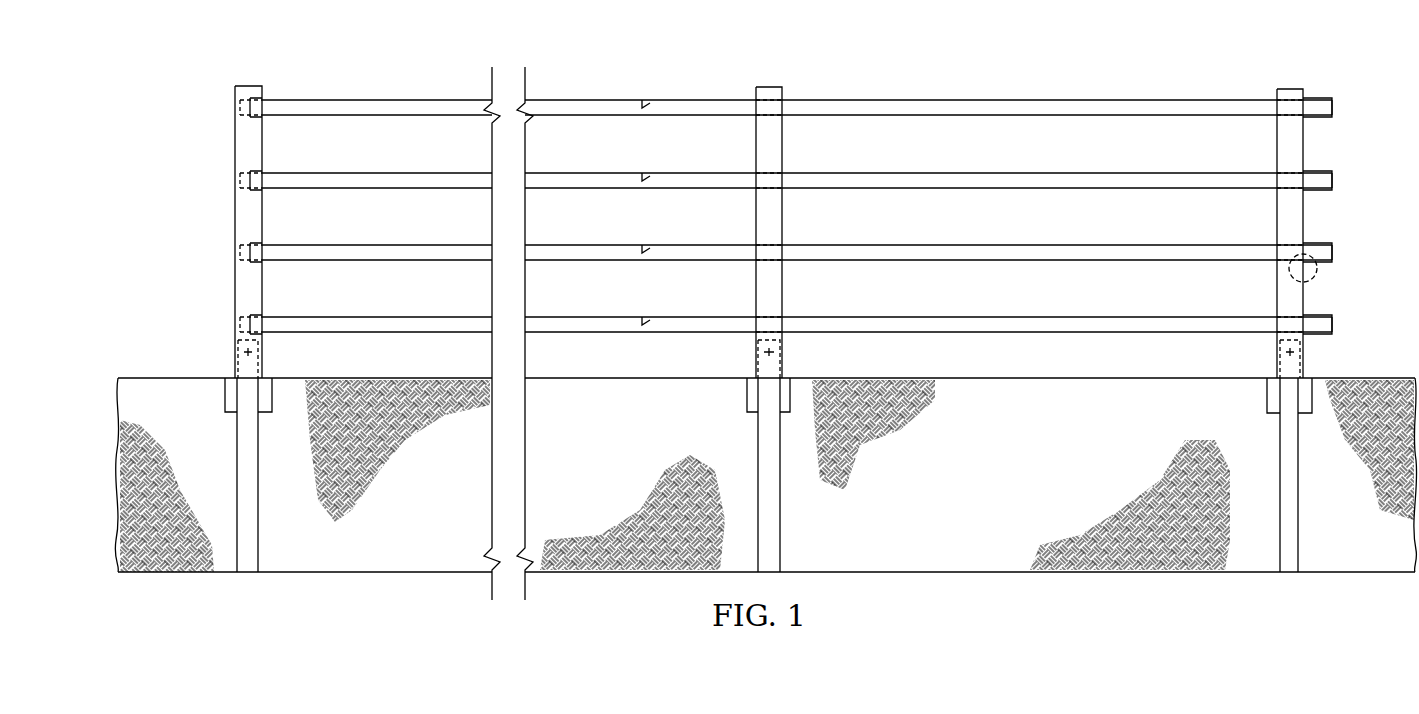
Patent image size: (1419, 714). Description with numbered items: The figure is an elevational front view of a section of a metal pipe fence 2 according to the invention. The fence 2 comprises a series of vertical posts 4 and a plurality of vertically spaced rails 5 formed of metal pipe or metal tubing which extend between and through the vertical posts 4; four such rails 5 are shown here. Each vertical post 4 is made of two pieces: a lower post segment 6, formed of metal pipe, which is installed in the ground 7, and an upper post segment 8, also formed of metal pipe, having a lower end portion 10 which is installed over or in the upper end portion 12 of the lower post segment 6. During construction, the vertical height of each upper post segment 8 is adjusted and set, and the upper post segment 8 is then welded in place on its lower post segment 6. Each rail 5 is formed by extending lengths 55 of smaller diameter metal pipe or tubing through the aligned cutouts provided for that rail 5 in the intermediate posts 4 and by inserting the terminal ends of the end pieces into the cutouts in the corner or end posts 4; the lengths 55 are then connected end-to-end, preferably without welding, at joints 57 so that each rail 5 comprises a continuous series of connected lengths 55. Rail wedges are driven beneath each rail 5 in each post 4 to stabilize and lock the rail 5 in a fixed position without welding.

The metal pipe fence 2 is at (952, 70).
The vertical post 4 is at (233, 140).
The rail 5 is at (376, 98).
The lower post segment 6 is at (237, 476).
The ground 7 is at (370, 576).
The upper post segment 8 is at (264, 294).
The lower end portion 10 is at (782, 366).
The upper end portion 12 is at (758, 350).
The length of metal pipe or tubing 55 is at (582, 98).
The rail coupler 57 is at (650, 98).